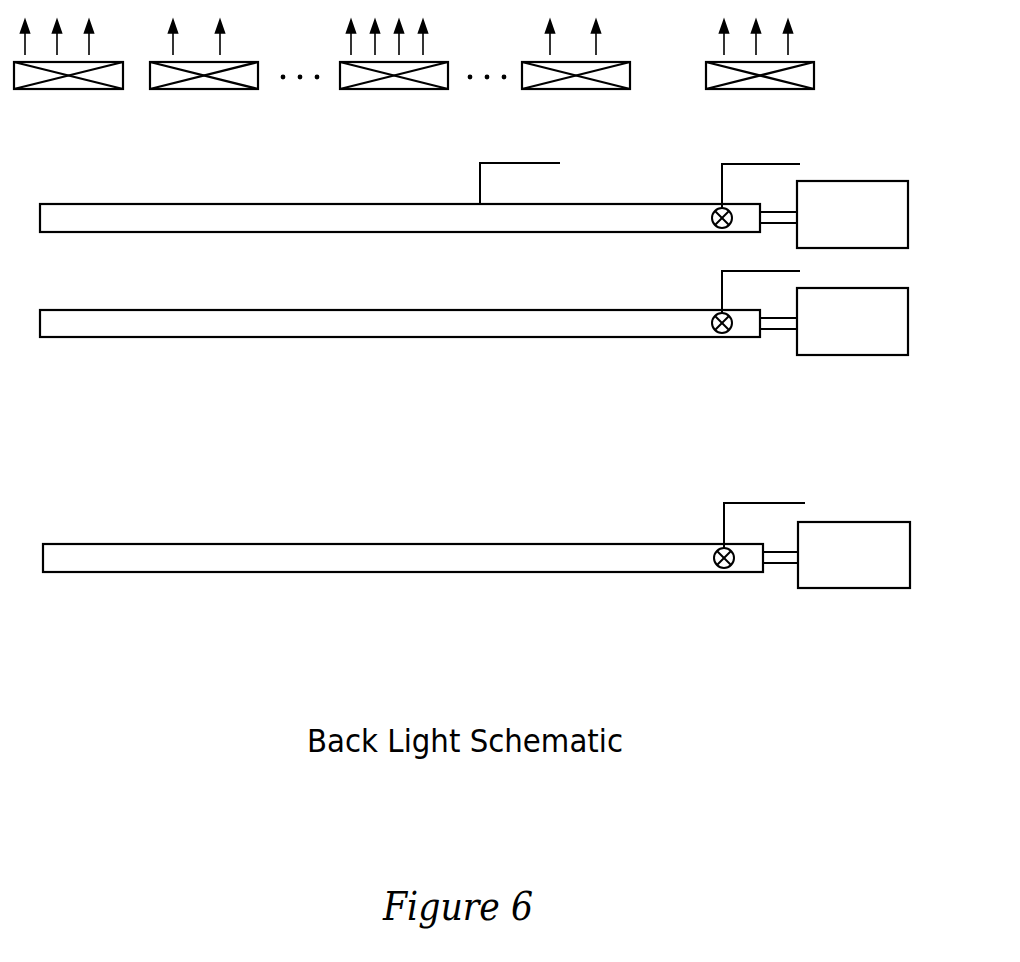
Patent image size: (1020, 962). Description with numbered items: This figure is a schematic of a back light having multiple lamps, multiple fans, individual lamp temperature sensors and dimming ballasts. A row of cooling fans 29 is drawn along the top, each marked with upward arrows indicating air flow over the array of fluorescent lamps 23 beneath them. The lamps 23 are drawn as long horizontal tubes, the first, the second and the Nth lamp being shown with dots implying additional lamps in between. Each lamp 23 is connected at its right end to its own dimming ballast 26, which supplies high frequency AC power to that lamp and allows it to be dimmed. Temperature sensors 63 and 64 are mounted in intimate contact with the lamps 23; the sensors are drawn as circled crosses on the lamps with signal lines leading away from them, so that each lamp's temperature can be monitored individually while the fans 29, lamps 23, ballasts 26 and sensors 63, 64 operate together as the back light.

The cooling fans 29 is at (444, 80).
The fluorescent lamps 23 is at (401, 374).
The temperature sensor 64 is at (537, 168).
The temperature sensor 63 is at (775, 356).
The dimming ballast 26 is at (836, 363).